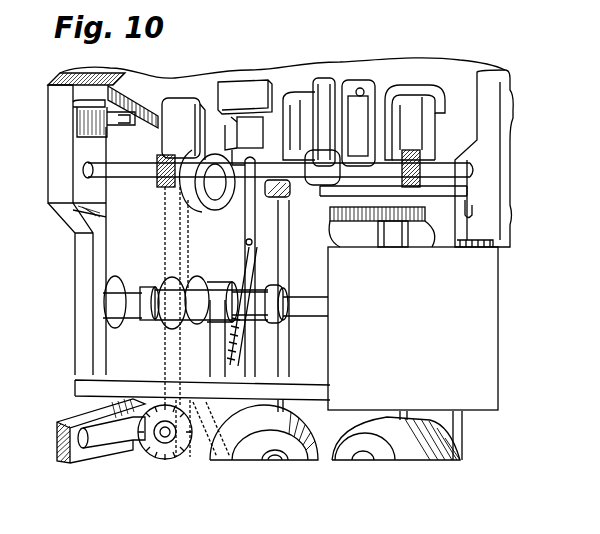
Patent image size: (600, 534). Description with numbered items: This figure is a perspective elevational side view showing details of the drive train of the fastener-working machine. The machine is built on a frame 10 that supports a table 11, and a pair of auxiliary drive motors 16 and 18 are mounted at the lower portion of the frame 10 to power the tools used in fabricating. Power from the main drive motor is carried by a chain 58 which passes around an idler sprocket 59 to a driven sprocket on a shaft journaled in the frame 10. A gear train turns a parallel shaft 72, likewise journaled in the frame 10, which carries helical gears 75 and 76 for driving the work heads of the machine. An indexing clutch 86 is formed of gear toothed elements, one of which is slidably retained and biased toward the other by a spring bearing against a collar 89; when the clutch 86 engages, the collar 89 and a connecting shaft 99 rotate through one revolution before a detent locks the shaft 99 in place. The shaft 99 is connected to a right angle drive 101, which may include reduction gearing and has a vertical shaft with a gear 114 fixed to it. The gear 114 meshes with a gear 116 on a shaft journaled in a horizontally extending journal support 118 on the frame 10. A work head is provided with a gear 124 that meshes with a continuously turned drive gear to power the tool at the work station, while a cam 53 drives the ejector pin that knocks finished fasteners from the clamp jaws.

The frame 10 is at (35, 140).
The table 11 is at (478, 64).
The auxiliary drive motor 16 is at (293, 422).
The auxiliary drive motor 18 is at (377, 427).
The cam 53 is at (279, 132).
The chain 58 is at (115, 350).
The idler sprocket 59 is at (90, 416).
The shaft 72 is at (128, 182).
The helical gear 75 is at (408, 150).
The helical gear 76 is at (159, 152).
The indexing clutch 86 is at (180, 268).
The collar 89 is at (263, 273).
The shaft 99 is at (285, 302).
The right angle drive 101 is at (328, 351).
The gear 114 is at (415, 232).
The gear 116 is at (343, 244).
The journal support 118 is at (375, 125).
The gear 124 is at (450, 255).